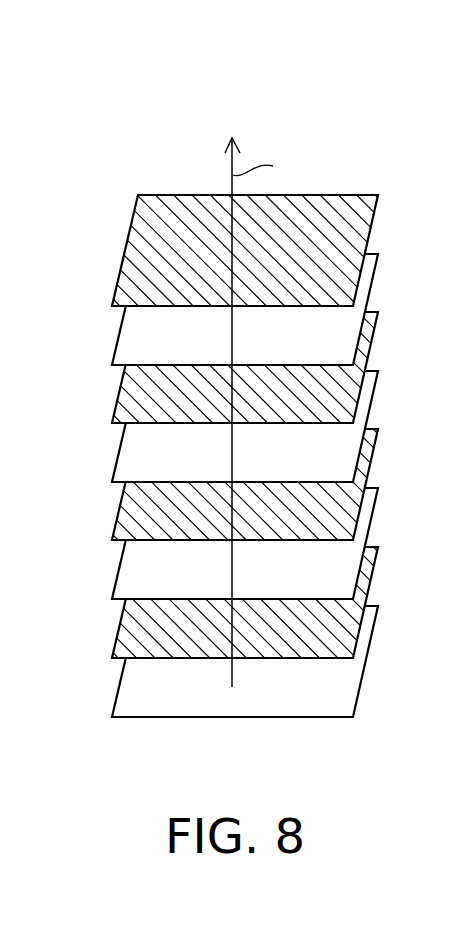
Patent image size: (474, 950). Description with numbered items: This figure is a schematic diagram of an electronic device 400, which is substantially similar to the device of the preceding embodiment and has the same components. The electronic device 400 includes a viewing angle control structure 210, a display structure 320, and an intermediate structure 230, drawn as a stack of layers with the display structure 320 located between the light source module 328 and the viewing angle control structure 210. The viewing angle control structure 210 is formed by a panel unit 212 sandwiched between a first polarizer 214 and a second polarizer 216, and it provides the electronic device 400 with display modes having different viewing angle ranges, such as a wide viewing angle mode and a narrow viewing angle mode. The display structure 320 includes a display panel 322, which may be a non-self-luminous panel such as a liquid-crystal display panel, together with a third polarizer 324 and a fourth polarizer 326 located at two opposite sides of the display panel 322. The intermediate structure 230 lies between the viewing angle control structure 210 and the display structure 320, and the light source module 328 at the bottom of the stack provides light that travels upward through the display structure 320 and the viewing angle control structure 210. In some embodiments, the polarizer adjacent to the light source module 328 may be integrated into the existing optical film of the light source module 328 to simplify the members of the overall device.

The electronic device 400 is at (248, 388).
The viewing angle control structure 210 is at (244, 310).
The second polarizer 216 is at (345, 225).
The panel unit 212 is at (345, 333).
The first polarizer 214 is at (345, 396).
The intermediate structure 230 is at (345, 450).
The display structure 320 is at (244, 332).
The fourth polarizer 326 is at (345, 513).
The display panel 322 is at (345, 570).
The third polarizer 324 is at (345, 632).
The light source module 328 is at (345, 688).